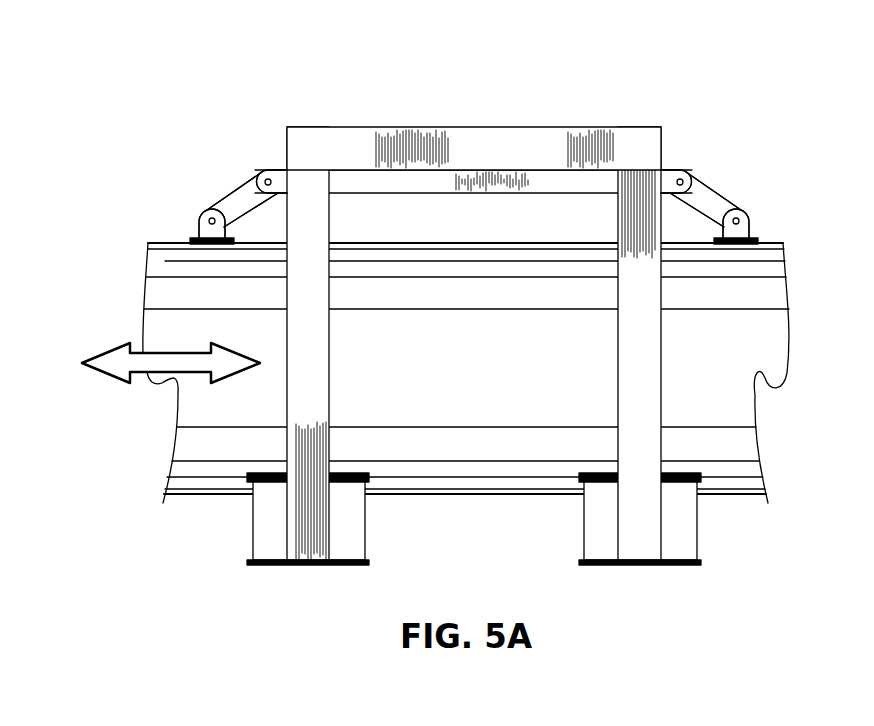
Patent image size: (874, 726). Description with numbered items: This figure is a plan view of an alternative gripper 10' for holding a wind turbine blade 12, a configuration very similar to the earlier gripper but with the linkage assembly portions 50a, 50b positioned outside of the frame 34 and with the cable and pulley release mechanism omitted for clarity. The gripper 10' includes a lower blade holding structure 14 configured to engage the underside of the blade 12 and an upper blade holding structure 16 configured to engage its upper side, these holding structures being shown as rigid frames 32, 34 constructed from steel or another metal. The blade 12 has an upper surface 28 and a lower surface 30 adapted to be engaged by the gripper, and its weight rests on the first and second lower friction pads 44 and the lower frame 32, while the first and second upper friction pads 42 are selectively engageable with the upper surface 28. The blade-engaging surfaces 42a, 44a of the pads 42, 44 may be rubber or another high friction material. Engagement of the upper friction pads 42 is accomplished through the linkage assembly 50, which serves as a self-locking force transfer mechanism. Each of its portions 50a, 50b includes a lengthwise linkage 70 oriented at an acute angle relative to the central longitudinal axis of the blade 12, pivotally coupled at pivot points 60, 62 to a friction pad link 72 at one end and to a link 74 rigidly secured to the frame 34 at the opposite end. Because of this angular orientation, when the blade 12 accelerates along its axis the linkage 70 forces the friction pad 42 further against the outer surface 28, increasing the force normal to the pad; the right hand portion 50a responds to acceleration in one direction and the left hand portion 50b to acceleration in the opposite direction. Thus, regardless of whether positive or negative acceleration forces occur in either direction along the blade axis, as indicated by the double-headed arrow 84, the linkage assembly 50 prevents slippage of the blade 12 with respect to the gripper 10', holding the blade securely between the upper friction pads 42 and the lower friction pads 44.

The alternative gripper 10' is at (488, 304).
The wind turbine blade 12 is at (743, 498).
The lower blade holding structure 14 is at (698, 531).
The upper blade holding structure 16 is at (474, 331).
The upper surface 28 is at (488, 256).
The lower surface 30 is at (480, 486).
The lower frame portion 32 is at (305, 556).
The upper frame portion 34 is at (478, 135).
The upper friction pad 42 is at (148, 243).
The upper friction pad surface 42a is at (218, 246).
The lower friction pad 44 is at (370, 480).
The lower friction pad surface 44a is at (358, 473).
The linkage assembly 50 is at (400, 197).
The linkage assembly portion 50a is at (242, 170).
The linkage assembly portion 50b is at (706, 170).
The pivot point 60 is at (265, 178).
The pivot point 62 is at (210, 217).
The lengthwise linkage 70 is at (238, 195).
The friction pad link 72 is at (206, 230).
The link 74 is at (269, 178).
The double-headed arrow 84 is at (179, 362).